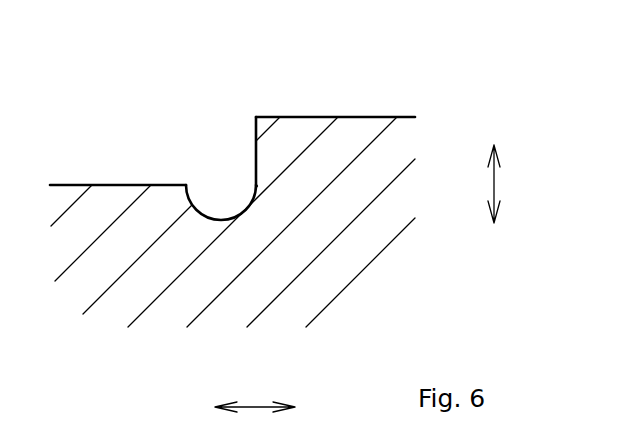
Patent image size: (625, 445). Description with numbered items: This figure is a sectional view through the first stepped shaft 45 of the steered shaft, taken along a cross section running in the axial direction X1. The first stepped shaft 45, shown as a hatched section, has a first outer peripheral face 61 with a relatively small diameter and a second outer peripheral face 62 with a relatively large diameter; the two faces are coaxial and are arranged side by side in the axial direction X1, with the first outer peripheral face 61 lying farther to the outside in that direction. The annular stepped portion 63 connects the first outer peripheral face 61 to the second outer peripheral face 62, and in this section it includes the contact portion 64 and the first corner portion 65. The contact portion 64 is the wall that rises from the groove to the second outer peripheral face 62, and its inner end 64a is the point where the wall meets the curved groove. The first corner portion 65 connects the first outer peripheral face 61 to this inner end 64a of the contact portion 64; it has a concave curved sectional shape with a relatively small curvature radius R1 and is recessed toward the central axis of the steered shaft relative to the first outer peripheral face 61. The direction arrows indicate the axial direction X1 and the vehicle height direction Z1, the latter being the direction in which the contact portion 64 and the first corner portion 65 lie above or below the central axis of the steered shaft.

The first stepped shaft 45 is at (252, 203).
The first outer peripheral face 61 is at (110, 185).
The second outer peripheral face 62 is at (360, 117).
The stepped portion 63 is at (313, 148).
The contact portion 64 is at (255, 133).
The inner end of the contact portion 64a is at (257, 187).
The first corner portion 65 is at (191, 203).
The curvature radius R1 is at (240, 207).
The vehicle height direction Z1 is at (495, 183).
The axial direction X1 is at (257, 405).